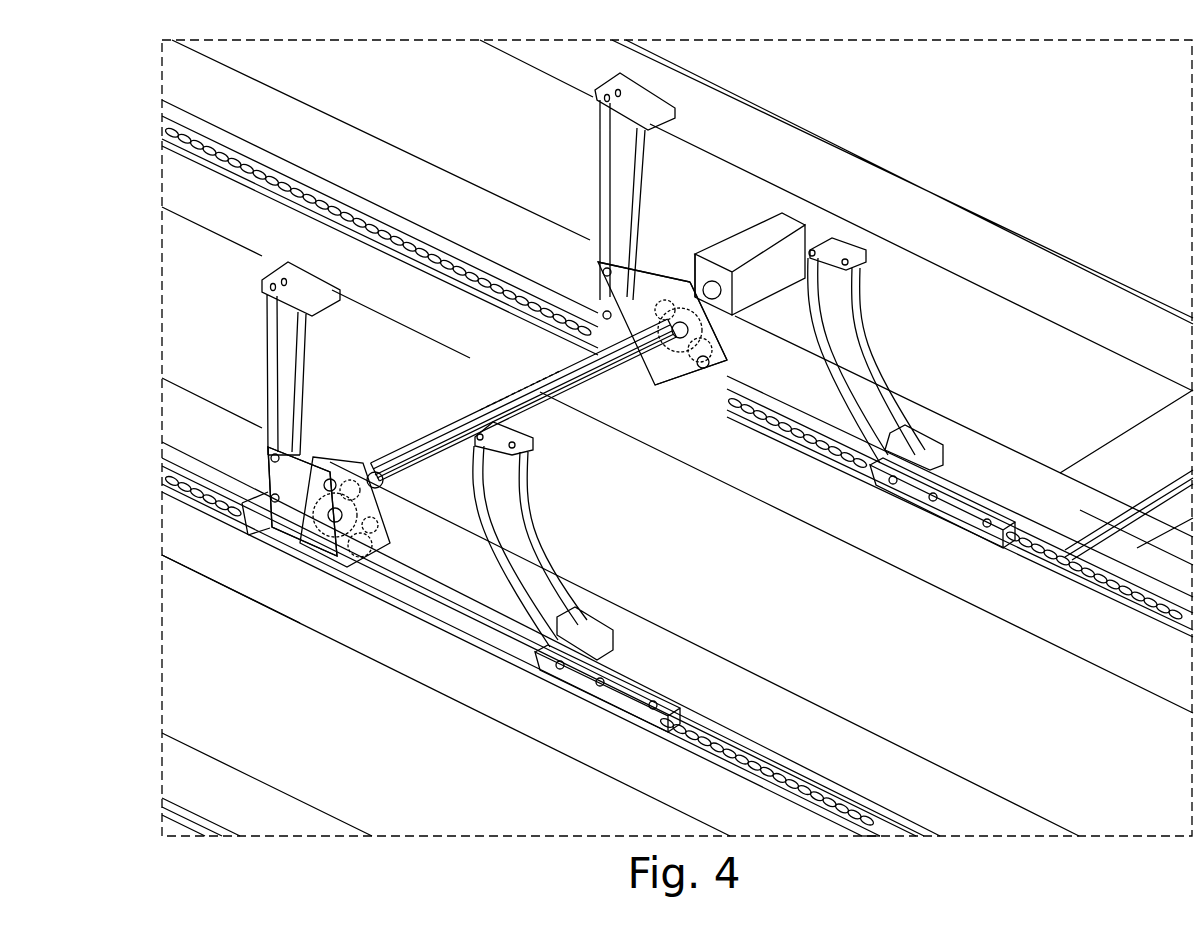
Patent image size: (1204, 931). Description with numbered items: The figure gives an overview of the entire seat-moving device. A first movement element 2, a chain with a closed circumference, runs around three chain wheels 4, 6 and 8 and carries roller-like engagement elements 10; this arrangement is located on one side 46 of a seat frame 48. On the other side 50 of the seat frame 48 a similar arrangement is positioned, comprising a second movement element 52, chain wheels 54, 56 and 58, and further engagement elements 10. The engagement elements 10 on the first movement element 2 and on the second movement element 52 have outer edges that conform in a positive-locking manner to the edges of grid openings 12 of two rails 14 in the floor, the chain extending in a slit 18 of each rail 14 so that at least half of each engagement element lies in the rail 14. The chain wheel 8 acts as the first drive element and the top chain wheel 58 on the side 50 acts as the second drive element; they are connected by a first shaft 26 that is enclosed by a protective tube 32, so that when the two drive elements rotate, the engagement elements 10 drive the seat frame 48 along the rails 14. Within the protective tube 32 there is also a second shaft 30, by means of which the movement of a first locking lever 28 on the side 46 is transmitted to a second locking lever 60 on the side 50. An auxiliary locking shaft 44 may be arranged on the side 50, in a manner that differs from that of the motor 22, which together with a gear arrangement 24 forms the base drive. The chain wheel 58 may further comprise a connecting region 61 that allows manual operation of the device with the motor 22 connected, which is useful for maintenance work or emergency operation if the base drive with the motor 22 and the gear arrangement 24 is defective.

The first movement element 2 is at (700, 390).
The chain wheel 4 is at (640, 375).
The chain wheel 6 is at (690, 380).
The chain wheel 8 is at (690, 285).
The engagement elements 10 is at (708, 338).
The grid openings 12 is at (1089, 598).
The rail 14 is at (835, 805).
The slit 18 is at (896, 845).
The motor 22 is at (785, 222).
The gear arrangement 24 is at (700, 262).
The first shaft 26 is at (366, 472).
The first locking lever 28 is at (650, 370).
The second shaft 30 is at (470, 412).
The protective tube 32 is at (537, 403).
The auxiliary locking shaft 44 is at (330, 545).
The side 46 is at (917, 338).
The seat frame 48 is at (975, 495).
The side 50 is at (483, 717).
The second movement element 52 is at (365, 560).
The chain wheel 54 is at (345, 548).
The chain wheel 56 is at (300, 553).
The chain wheel 58 is at (350, 480).
The second locking lever 60 is at (380, 497).
The connecting region 61 is at (332, 455).